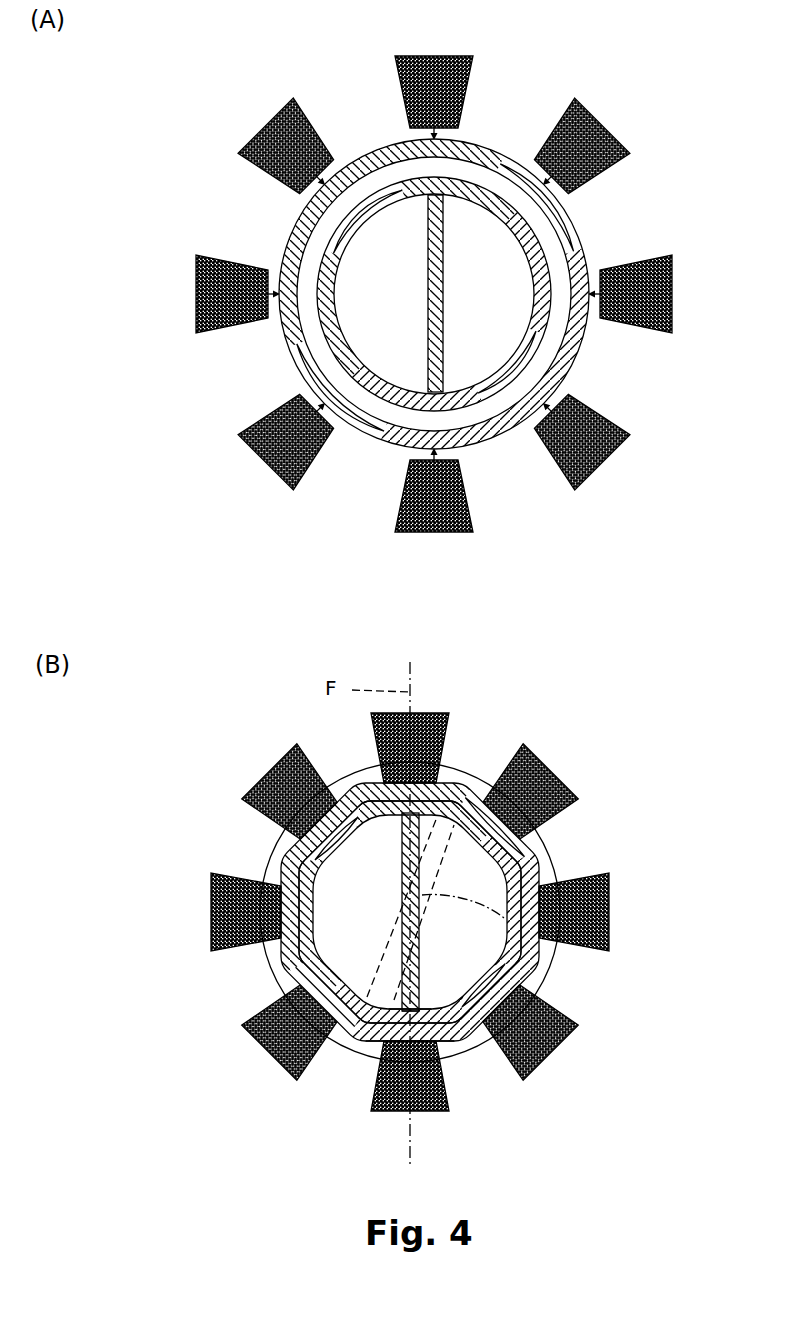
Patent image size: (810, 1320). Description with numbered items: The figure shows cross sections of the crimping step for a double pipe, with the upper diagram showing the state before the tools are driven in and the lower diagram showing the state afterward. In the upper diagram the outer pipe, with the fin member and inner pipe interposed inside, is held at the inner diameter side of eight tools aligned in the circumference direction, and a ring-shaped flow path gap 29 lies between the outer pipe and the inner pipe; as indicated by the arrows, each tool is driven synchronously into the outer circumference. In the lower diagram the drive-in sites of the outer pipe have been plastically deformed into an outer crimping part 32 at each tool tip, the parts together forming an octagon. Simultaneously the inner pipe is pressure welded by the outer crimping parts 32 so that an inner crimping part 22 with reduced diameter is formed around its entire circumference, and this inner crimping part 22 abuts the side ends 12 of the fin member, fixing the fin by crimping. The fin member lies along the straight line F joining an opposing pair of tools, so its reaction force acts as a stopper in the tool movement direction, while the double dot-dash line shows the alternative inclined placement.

The side ends of the fin member 12 is at (428, 1042).
The inner crimping part 22 is at (391, 1021).
The flow path gap 29 is at (553, 245).
The outer crimping part 32 is at (398, 1036).